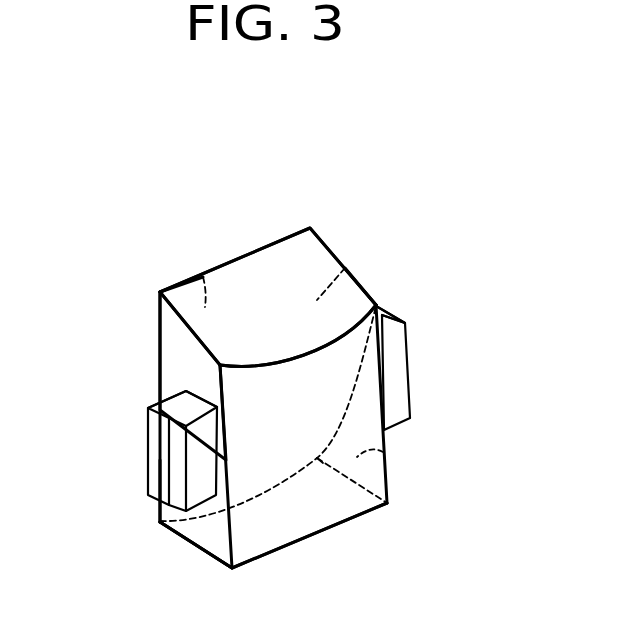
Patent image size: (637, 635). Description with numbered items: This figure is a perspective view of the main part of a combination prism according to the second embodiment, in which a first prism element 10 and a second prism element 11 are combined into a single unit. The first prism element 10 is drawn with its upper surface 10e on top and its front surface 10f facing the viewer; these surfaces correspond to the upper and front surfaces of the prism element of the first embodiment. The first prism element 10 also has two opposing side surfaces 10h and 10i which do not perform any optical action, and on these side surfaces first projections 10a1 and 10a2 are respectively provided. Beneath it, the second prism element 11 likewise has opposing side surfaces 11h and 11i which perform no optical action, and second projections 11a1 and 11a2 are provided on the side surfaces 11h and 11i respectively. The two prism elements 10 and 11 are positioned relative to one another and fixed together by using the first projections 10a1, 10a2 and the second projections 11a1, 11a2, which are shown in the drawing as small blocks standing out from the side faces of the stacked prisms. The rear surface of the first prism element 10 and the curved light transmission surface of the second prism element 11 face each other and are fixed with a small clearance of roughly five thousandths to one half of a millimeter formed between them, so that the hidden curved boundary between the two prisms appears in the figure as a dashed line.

The first prism element 10 is at (287, 218).
The upper surface 10e is at (270, 267).
The front surface 10f is at (203, 275).
The side surface 10h is at (172, 330).
The side surface 10i is at (345, 267).
The first projection 10a1 is at (173, 402).
The first projection 10a2 is at (380, 309).
The second prism element 11 is at (328, 518).
The second projection 11a1 is at (178, 473).
The second projection 11a2 is at (400, 352).
The side surface 11h is at (205, 540).
The side surface 11i is at (383, 452).